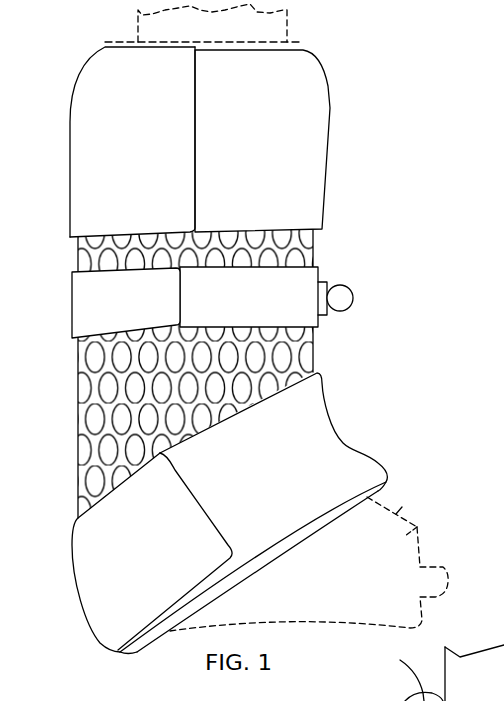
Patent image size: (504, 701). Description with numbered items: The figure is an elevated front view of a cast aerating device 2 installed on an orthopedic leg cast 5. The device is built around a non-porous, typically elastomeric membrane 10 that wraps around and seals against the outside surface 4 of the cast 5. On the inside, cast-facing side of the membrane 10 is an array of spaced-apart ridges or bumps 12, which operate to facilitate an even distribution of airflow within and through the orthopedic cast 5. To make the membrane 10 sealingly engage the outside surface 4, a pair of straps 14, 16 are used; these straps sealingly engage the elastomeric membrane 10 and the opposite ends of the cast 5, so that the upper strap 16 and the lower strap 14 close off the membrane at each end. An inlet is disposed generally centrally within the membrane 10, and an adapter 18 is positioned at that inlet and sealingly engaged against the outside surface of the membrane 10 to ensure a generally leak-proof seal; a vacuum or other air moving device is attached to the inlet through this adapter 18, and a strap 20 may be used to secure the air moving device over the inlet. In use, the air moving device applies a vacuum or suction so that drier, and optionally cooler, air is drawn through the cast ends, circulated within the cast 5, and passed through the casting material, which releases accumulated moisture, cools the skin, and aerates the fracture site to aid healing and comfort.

The inhaler device 2 is at (221, 329).
The outside surface 4 is at (421, 527).
The orthopedic cast 5 is at (403, 511).
The membrane 10 is at (221, 371).
The bumps 12 is at (240, 380).
The strap 14 is at (360, 453).
The strap 16 is at (323, 197).
The adapter 18 is at (355, 299).
The strap 20 is at (72, 307).